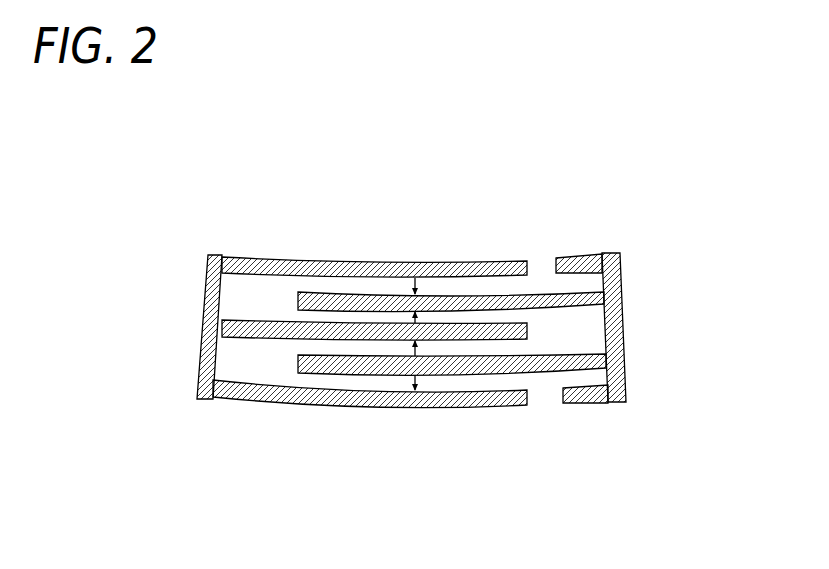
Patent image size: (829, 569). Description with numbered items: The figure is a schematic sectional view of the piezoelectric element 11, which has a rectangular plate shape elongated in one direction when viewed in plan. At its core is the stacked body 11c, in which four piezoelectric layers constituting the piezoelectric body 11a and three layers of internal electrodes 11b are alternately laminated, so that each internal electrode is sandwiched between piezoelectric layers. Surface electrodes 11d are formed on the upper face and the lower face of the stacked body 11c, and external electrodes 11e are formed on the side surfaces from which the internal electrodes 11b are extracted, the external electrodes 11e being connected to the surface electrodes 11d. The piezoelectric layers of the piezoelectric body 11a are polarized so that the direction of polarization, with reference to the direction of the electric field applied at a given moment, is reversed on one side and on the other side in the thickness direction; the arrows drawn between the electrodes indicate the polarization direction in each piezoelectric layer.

The piezoelectric element 11 is at (671, 230).
The piezoelectric body 11a is at (269, 370).
The internal electrodes 11b is at (275, 329).
The stacked body 11c is at (127, 259).
The surface electrodes 11d is at (460, 268).
The external electrodes 11e is at (213, 272).